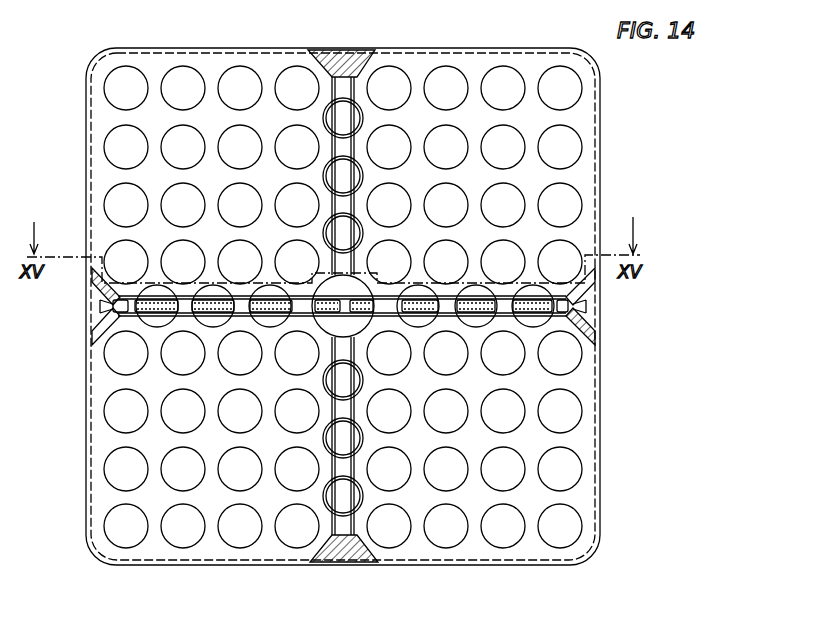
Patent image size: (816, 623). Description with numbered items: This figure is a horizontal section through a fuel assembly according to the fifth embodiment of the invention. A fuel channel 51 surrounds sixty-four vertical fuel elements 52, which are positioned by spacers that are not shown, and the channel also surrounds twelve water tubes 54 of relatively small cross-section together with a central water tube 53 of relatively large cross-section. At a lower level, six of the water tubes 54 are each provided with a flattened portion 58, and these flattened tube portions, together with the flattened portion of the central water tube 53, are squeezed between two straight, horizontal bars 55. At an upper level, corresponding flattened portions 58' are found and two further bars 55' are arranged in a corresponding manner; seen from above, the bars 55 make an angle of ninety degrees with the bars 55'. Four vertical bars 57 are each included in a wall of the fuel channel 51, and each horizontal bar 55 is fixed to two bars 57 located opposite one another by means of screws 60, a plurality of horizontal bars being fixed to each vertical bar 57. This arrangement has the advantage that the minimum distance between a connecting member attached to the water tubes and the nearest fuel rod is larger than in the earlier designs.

The fuel channel 51 is at (600, 440).
The fuel elements 52 is at (560, 78).
The central water tube 53 is at (372, 278).
The water tubes 54 is at (547, 283).
The horizontal bars 55 is at (342, 346).
The horizontal bars 55' is at (332, 310).
The vertical bars 57 is at (357, 53).
The flattened portion 58 is at (305, 359).
The flattened portion 58' is at (315, 357).
The screws 60 is at (100, 313).